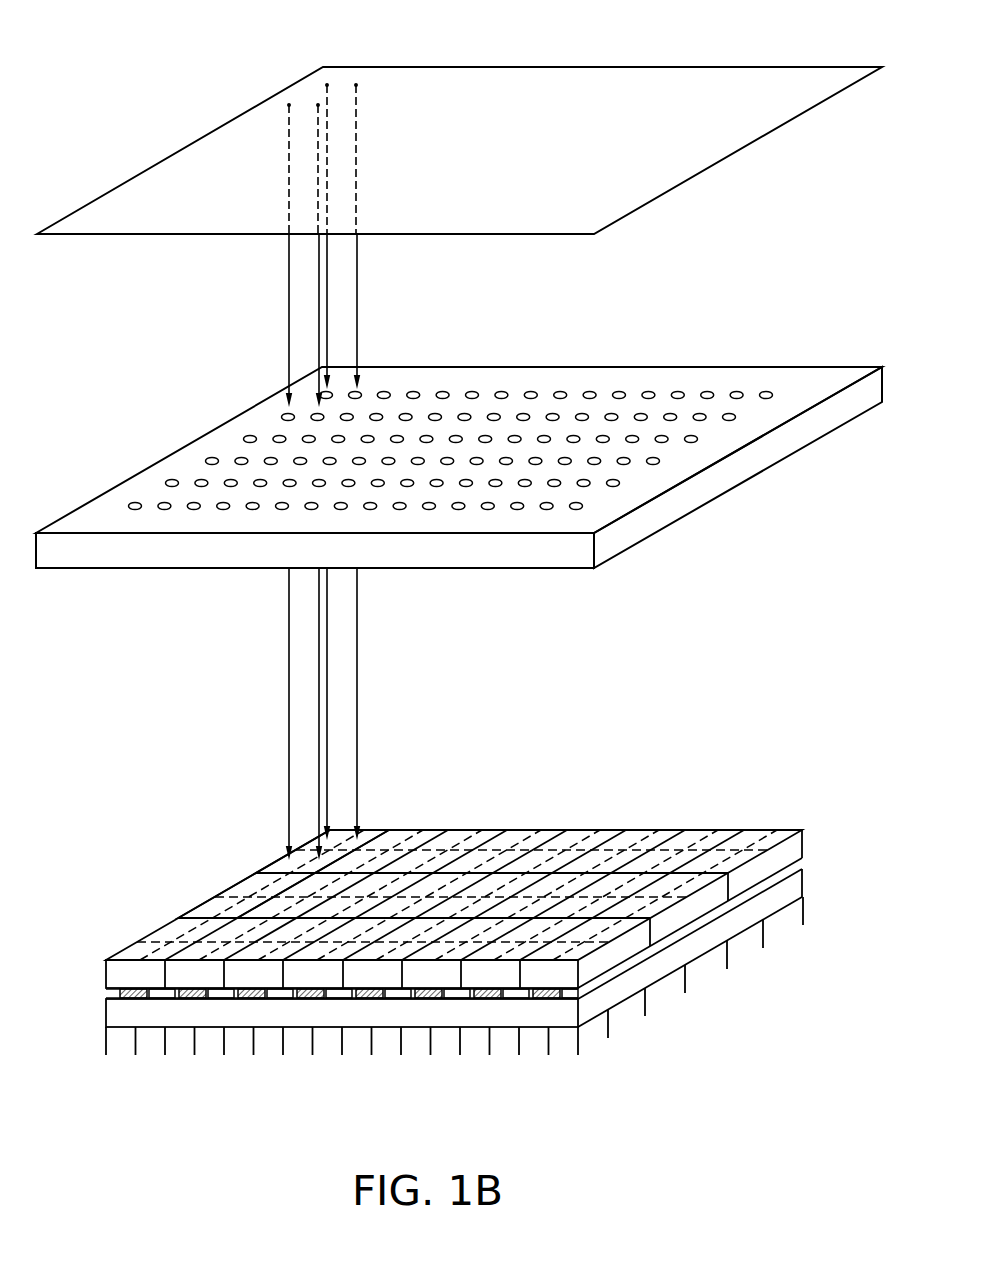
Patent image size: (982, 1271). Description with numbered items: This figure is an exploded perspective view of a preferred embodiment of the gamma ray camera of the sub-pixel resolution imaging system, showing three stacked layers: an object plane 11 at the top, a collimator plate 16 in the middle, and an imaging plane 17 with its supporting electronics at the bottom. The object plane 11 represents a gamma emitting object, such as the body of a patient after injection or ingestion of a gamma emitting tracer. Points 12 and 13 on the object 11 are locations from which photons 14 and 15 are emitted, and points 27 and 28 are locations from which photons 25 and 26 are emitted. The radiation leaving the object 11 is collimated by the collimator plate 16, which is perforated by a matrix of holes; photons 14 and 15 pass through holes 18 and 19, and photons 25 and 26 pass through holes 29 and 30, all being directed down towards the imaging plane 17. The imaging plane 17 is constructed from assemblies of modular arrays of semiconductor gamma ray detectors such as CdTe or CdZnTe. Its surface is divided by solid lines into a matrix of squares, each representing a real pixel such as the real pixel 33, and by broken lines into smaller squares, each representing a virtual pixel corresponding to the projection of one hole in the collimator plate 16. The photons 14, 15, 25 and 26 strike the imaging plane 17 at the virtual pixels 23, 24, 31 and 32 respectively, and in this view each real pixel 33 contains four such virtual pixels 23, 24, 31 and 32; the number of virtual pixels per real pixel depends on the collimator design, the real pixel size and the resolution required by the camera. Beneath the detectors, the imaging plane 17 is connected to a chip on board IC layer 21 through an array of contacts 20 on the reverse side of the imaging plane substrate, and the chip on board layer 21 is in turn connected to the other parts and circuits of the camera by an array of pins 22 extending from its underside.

The object plane 11 is at (700, 83).
The point 12 is at (288, 105).
The point 13 is at (318, 105).
The point 27 is at (327, 85).
The point 28 is at (356, 85).
The photon 14 is at (289, 280).
The photon 15 is at (319, 316).
The photon 25 is at (327, 282).
The photon 26 is at (357, 307).
The collimator plate 16 is at (474, 427).
The hole 18 is at (283, 417).
The hole 19 is at (316, 413).
The hole 29 is at (332, 392).
The hole 30 is at (361, 395).
The imaging plane 17 is at (452, 944).
The virtual pixel 23 is at (280, 867).
The virtual pixel 24 is at (278, 885).
The virtual pixel 31 is at (312, 843).
The virtual pixel 32 is at (368, 830).
The real pixel 33 is at (360, 847).
The array of contacts 20 is at (132, 999).
The chip on board IC layer 21 is at (152, 1017).
The array of pins 22 is at (193, 1048).